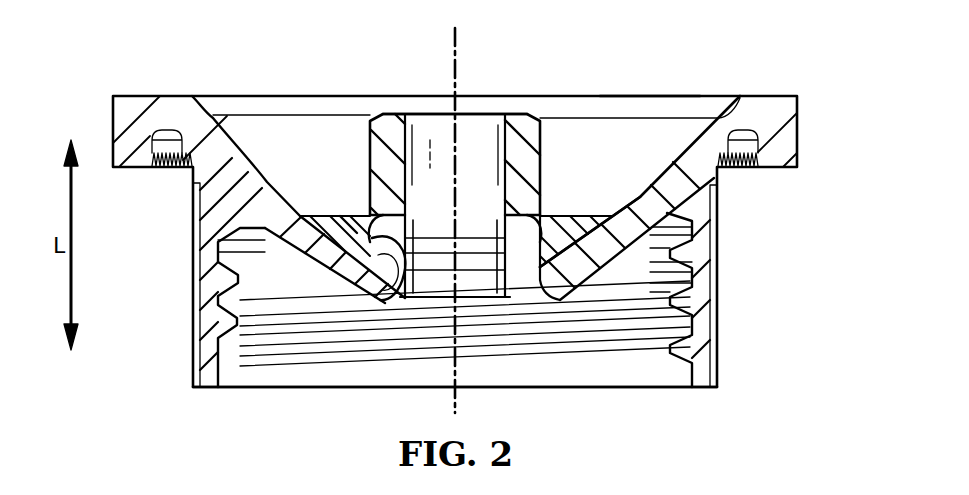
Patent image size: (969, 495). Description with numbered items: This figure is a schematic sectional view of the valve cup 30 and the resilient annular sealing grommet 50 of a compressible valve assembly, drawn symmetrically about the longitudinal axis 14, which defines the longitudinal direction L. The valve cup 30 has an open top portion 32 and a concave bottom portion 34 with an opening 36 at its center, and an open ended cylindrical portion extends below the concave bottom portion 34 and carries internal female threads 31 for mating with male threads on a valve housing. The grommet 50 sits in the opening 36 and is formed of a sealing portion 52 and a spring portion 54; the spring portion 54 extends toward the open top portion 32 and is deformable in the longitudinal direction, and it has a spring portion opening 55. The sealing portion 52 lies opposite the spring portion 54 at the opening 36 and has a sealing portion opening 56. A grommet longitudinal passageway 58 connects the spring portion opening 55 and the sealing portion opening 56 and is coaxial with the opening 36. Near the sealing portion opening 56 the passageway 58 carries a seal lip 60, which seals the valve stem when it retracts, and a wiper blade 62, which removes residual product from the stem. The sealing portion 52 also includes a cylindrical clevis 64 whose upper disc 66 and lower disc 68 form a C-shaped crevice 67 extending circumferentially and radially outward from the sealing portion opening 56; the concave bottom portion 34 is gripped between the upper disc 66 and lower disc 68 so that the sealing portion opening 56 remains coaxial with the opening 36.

The longitudinal axis 14 is at (458, 44).
The valve cup 30 is at (172, 94).
The internal female threads 31 is at (258, 337).
The open top portion 32 is at (614, 91).
The concave bottom portion 34 is at (613, 220).
The opening 36 is at (522, 232).
The resilient annular sealing grommet 50 is at (526, 110).
The sealing portion 52 is at (402, 300).
The spring portion 54 is at (370, 150).
The spring portion opening 55 is at (438, 128).
The sealing portion opening 56 is at (430, 280).
The grommet longitudinal passageway 58 is at (477, 140).
The seal lip 60 is at (478, 270).
The wiper blade 62 is at (490, 300).
The cylindrical clevis 64 is at (284, 273).
The upper disc 66 is at (322, 218).
The C-shaped crevice 67 is at (392, 225).
The lower disc 68 is at (287, 298).